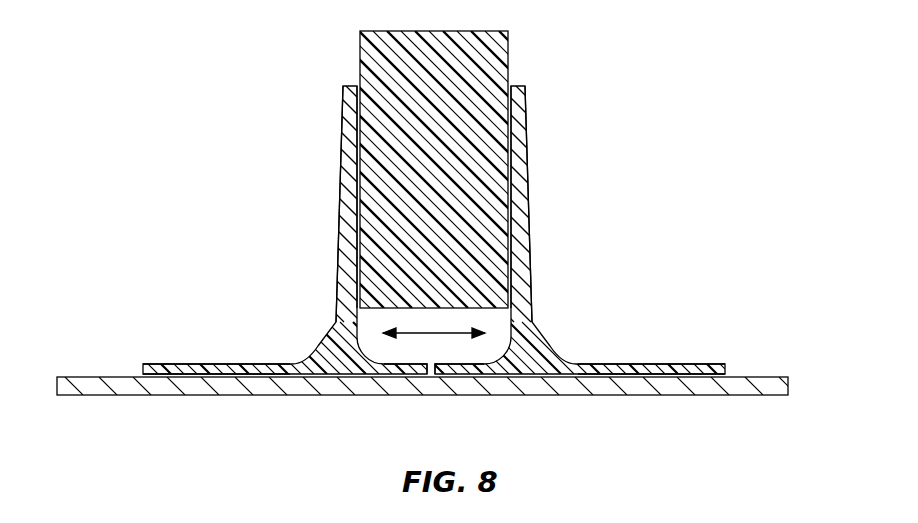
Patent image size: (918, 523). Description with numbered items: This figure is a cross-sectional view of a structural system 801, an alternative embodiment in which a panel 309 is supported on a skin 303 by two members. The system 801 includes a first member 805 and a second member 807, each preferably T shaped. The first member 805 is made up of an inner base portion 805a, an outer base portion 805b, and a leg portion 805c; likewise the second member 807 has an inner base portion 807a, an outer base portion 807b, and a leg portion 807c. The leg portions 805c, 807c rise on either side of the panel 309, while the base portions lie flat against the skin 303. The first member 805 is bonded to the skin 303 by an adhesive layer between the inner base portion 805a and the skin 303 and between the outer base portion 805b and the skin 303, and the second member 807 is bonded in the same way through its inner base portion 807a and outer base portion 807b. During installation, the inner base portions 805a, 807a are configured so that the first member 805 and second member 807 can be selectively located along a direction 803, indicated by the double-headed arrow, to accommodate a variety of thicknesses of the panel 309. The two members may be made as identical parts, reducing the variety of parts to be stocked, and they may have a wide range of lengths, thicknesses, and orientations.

The skin 303 is at (225, 395).
The panel 309 is at (509, 60).
The system 801 is at (237, 195).
The direction 803 is at (445, 333).
The first member 805 is at (325, 343).
The inner base portion 805a is at (430, 368).
The outer base portion 805b is at (187, 362).
The leg portion 805c is at (343, 122).
The second member 807 is at (542, 342).
The inner base portion 807a is at (464, 372).
The outer base portion 807b is at (683, 362).
The leg portion 807c is at (527, 176).